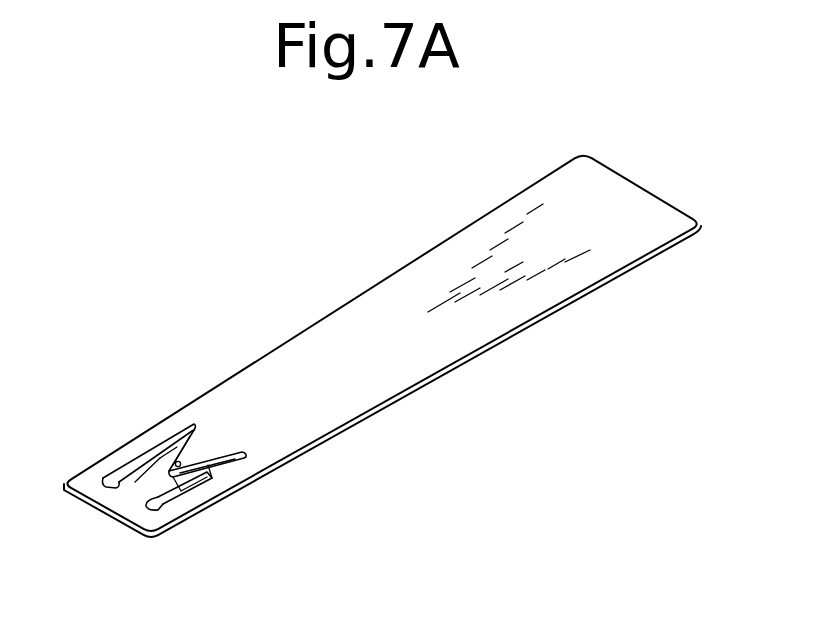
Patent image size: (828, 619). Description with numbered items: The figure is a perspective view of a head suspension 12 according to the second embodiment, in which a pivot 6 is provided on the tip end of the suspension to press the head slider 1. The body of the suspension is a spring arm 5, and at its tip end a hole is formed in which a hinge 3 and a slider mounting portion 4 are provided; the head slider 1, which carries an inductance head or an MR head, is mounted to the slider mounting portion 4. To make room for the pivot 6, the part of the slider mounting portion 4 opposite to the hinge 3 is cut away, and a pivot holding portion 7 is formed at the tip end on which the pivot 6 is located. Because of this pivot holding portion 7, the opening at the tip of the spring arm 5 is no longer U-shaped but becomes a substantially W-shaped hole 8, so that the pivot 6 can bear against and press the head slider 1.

The head suspension 12 is at (290, 257).
The spring arm 5 is at (422, 272).
The hinge 3 is at (128, 496).
The head slider 1 is at (160, 458).
The slider mounting portion 4 is at (118, 457).
The pivot holding portion 7 is at (197, 447).
The substantially W-shaped hole 8 is at (233, 454).
The pivot 6 is at (195, 473).